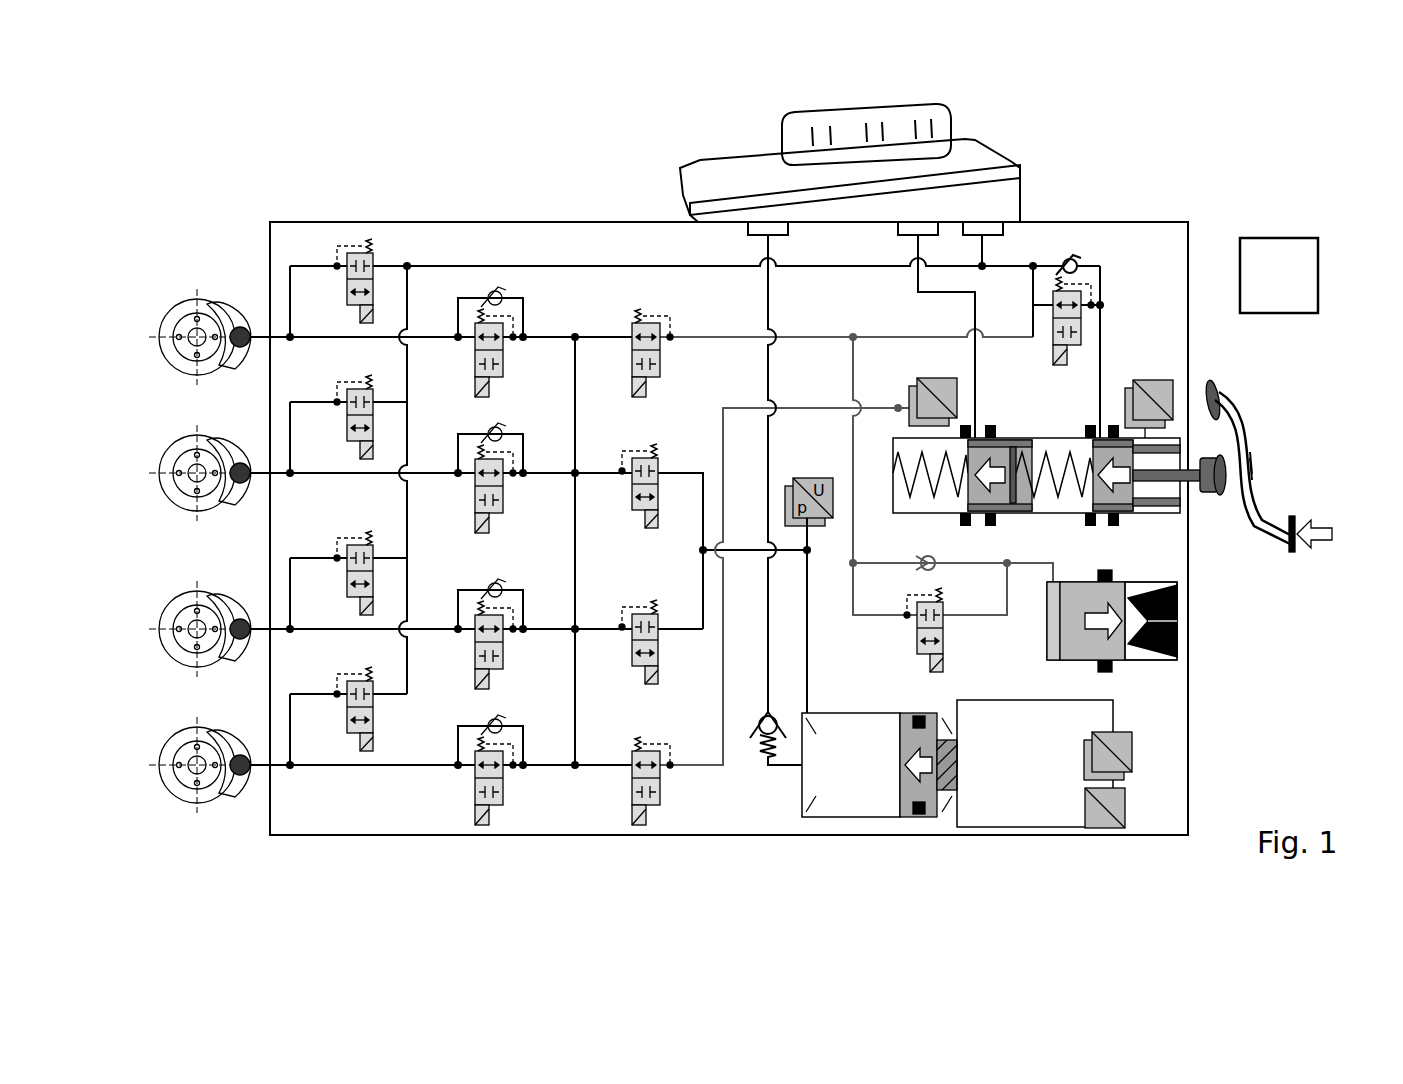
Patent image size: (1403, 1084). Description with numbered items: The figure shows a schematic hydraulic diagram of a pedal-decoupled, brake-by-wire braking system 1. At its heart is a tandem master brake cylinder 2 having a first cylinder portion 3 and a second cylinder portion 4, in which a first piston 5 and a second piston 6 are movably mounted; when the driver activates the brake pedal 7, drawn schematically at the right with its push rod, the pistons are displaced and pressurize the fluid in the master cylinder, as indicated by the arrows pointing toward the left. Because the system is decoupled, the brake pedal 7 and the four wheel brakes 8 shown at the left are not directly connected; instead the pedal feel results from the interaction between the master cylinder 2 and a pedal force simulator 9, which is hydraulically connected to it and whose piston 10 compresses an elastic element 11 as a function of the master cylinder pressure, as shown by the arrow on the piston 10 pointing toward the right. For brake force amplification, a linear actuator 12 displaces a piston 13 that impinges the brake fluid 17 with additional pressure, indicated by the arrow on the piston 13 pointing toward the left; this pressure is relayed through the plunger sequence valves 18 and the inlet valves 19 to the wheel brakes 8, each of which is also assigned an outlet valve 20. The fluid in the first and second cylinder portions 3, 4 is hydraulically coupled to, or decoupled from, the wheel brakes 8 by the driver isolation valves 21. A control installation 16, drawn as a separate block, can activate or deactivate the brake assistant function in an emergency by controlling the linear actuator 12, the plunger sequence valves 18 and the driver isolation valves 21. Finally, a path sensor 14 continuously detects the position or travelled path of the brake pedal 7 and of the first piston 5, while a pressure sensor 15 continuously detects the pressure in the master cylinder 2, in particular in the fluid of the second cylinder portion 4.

The braking system 1 is at (1220, 220).
The tandem master brake cylinder 2 is at (1043, 460).
The first cylinder portion 3 is at (1046, 515).
The second cylinder portion 4 is at (893, 513).
The first piston 5 is at (1135, 497).
The second piston 6 is at (1018, 460).
The brake pedal 7 is at (1302, 540).
The wheel brakes 8 is at (226, 309).
The pedal force simulator 9 is at (1115, 627).
The piston 10 is at (1073, 596).
The elastic element 11 is at (1165, 582).
The linear actuator 12 is at (1044, 764).
The piston 13 is at (905, 713).
The path sensor 14 is at (1146, 382).
The pressure sensor 15 is at (923, 388).
The control installation 16 is at (1279, 275).
The brake fluid 17 is at (851, 765).
The plunger sequence valves 18 is at (617, 495).
The inlet valves 19 is at (527, 843).
The outlet valves 20 is at (405, 843).
The driver isolation valves 21 is at (628, 354).